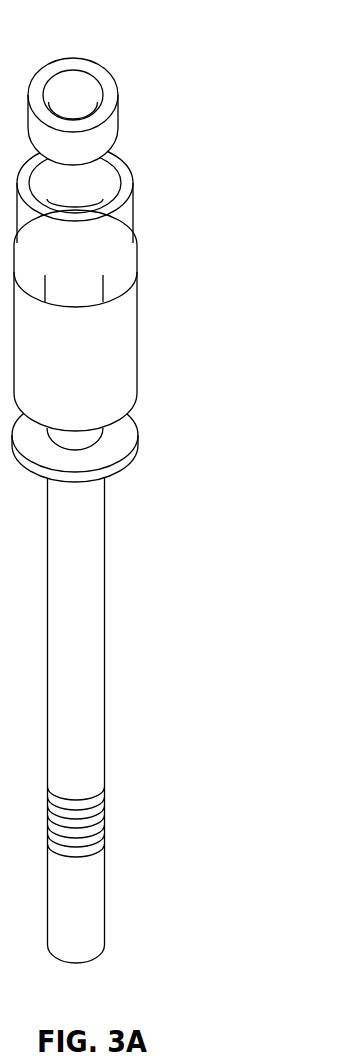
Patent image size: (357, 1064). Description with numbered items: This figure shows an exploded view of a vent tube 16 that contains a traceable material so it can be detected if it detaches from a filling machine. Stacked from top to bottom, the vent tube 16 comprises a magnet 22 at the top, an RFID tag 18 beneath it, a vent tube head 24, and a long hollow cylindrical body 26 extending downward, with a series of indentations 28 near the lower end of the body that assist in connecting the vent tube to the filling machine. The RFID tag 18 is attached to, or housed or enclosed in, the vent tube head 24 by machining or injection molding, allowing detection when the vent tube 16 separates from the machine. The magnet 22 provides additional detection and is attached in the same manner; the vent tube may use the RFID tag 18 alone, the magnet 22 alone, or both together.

The vent tube 16 is at (237, 55).
The RFID tag 18 is at (128, 213).
The magnet 22 is at (105, 122).
The vent tube head 24 is at (130, 337).
The hollow cylindrical body 26 is at (97, 550).
The indentations 28 is at (100, 825).